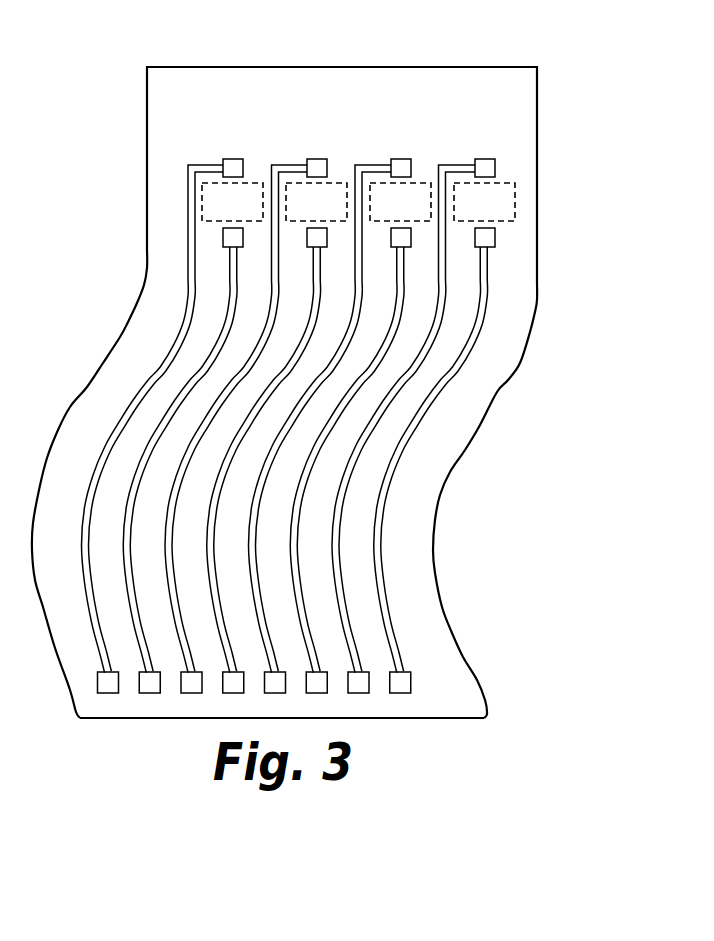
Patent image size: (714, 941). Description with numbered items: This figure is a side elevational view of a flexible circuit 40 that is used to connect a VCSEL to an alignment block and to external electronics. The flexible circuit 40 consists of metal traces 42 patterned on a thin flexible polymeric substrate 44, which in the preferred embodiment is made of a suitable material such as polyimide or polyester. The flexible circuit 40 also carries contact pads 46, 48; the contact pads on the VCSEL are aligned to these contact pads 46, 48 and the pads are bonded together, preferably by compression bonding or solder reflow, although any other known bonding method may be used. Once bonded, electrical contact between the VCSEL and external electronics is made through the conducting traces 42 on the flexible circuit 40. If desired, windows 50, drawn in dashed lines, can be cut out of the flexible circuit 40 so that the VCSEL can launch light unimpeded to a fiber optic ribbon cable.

The flexible circuit 40 is at (532, 30).
The metal traces 42 is at (340, 528).
The thin flexible polymeric substrate 44 is at (537, 148).
The contact pad 46 is at (317, 159).
The contact pad 48 is at (478, 229).
The windows 50 is at (200, 193).